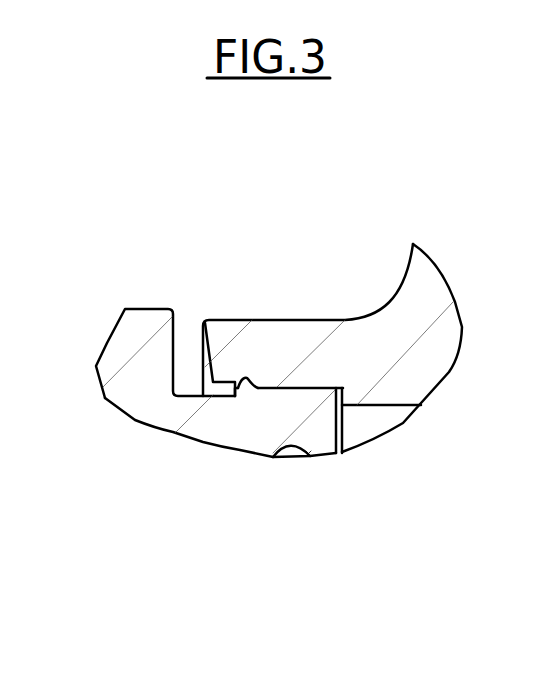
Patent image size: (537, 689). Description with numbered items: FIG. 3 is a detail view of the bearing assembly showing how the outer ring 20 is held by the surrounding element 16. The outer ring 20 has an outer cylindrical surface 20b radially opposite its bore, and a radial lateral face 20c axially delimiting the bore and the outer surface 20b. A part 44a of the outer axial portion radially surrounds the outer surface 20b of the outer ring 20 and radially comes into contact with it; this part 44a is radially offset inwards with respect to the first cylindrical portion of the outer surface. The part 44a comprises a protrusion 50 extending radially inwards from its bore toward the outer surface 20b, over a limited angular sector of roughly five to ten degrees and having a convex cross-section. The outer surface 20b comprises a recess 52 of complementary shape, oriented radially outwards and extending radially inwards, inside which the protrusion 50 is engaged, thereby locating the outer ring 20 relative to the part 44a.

The housing 16 is at (360, 348).
The outer ring 20 is at (255, 386).
The outer cylindrical surface 20b is at (151, 308).
The radial lateral face 20c is at (336, 422).
The part of the outer axial portion 44a is at (274, 348).
The protrusion 50 is at (285, 388).
The recess 52 is at (238, 390).